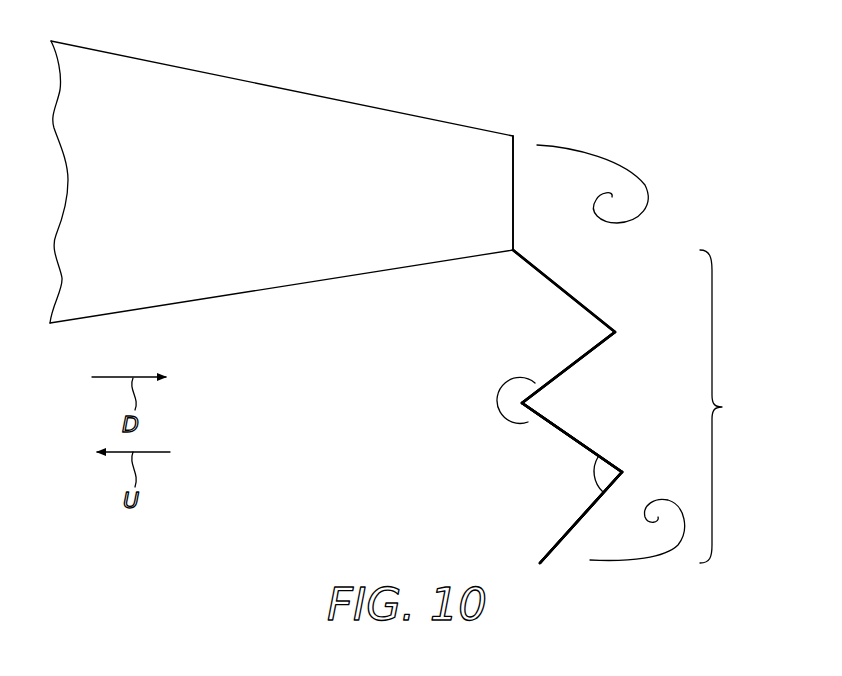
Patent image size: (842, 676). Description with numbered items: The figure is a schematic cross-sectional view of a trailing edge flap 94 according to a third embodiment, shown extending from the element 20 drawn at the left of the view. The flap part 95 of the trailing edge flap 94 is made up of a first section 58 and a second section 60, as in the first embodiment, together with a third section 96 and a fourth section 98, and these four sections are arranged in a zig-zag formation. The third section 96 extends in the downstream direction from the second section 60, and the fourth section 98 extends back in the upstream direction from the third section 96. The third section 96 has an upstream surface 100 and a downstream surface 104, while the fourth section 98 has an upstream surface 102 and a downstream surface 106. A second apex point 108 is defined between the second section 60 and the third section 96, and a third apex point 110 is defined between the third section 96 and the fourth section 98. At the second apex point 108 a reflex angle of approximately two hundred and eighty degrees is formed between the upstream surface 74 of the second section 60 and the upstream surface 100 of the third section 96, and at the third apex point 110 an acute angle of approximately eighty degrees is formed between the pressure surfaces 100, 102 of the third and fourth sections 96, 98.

The airfoil 20 is at (255, 60).
The first section 58 is at (546, 271).
The second section 60 is at (546, 380).
The upstream surface 74 is at (585, 349).
The trailing edge flap 94 is at (399, 429).
The flap part 95 is at (727, 406).
The third section 96 is at (558, 425).
The fourth section 98 is at (590, 508).
The upstream surface 100 is at (541, 427).
The upstream surface 102 is at (552, 540).
The downstream surface 104 is at (590, 436).
The downstream surface 106 is at (570, 545).
The second apex point 108 is at (512, 422).
The third apex point 110 is at (626, 472).